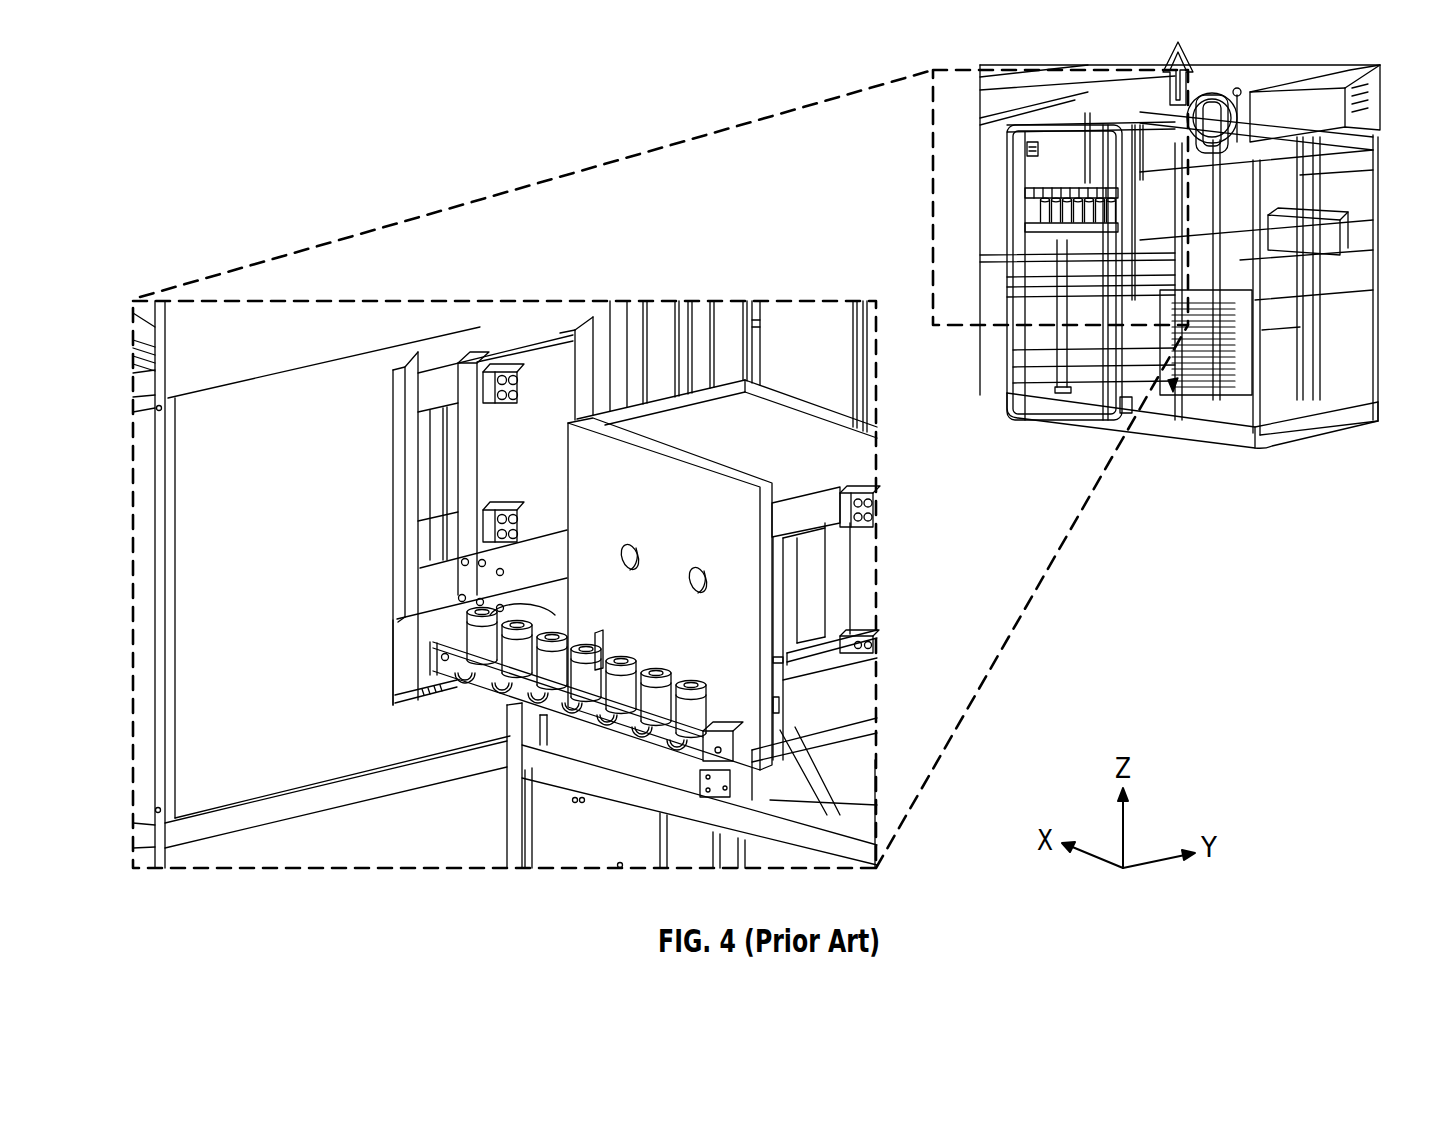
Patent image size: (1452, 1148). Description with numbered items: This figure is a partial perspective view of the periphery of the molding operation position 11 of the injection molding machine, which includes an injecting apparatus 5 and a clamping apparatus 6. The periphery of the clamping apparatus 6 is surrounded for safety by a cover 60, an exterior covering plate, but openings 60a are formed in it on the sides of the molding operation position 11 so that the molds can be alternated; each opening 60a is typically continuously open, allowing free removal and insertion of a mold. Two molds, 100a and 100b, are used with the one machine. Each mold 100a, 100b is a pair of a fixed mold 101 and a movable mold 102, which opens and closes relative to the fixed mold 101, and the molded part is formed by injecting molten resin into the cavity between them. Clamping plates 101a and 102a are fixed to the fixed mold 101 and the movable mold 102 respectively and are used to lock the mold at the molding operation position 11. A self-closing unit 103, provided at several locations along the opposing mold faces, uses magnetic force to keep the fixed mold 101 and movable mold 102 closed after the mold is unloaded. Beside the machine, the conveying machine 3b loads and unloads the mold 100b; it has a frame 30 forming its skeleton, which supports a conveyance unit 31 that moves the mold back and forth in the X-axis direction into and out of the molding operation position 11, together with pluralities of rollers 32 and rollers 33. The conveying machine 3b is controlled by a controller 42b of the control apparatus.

The conveying machine 3b is at (1255, 480).
The injecting apparatus 5 is at (1393, 128).
The clamping apparatus 6 is at (287, 312).
The molding operation position 11 is at (432, 614).
The frame 30 is at (832, 858).
The conveyance unit 31 is at (860, 712).
The rollers 32 is at (512, 650).
The rollers 33 is at (745, 746).
The controller 42b is at (1283, 406).
The cover 60 is at (252, 405).
The opening 60a is at (612, 315).
The mold 100a is at (472, 340).
The mold 100b is at (802, 370).
The fixed mold 101 is at (530, 345).
The clamping plate 101a is at (865, 433).
The movable mold 102 is at (458, 365).
The clamping plate 102a is at (398, 368).
The self-closing unit 103 is at (500, 370).